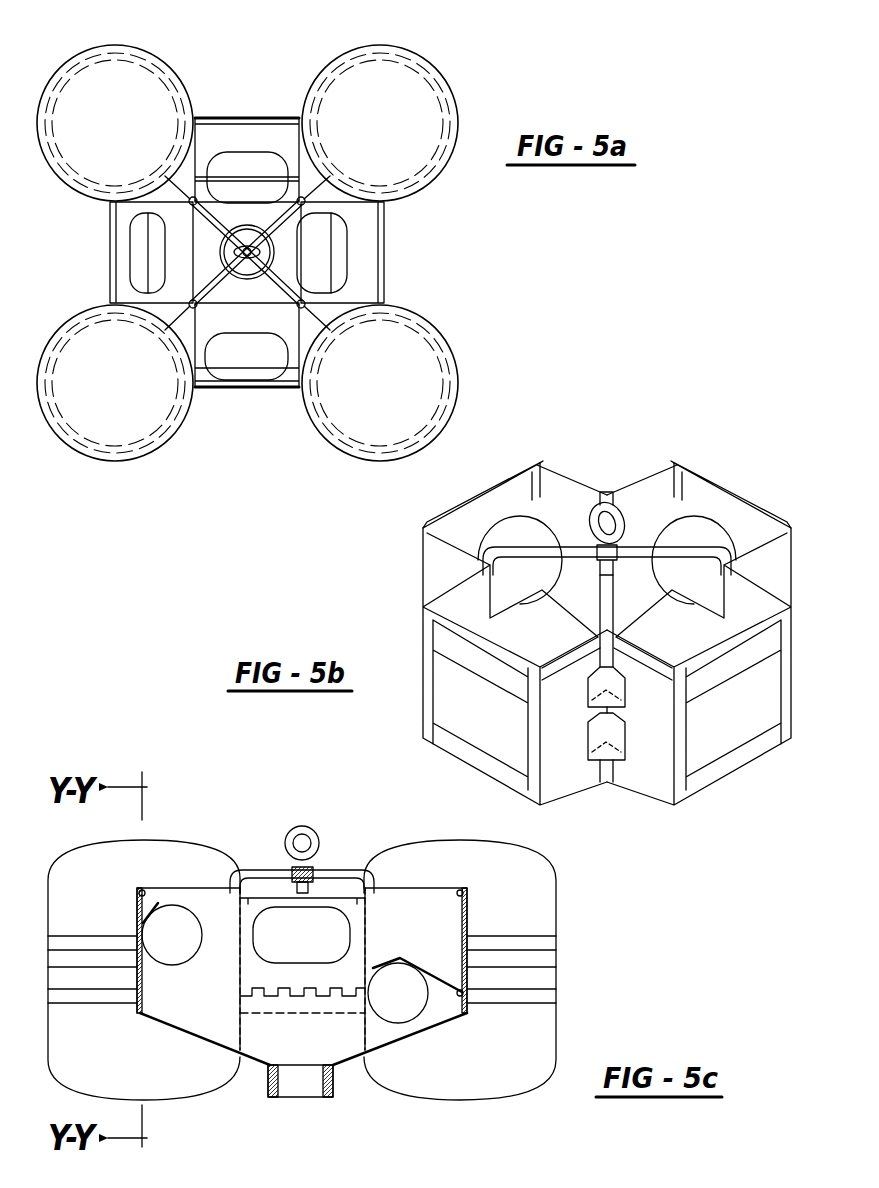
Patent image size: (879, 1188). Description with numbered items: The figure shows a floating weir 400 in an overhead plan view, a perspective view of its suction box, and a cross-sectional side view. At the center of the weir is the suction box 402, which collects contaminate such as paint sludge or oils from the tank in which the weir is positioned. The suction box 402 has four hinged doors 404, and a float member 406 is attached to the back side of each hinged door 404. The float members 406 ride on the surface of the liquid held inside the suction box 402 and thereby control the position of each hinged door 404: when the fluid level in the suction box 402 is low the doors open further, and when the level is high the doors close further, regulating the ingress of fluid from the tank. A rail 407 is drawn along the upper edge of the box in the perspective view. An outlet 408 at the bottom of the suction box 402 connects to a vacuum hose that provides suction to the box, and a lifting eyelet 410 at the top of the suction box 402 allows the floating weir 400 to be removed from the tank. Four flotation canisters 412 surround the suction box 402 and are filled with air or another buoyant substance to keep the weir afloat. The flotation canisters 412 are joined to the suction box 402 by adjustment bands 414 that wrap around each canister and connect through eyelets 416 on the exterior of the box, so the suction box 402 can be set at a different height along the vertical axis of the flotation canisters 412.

In FIG. 5a, the floating weir 400 is at (487, 65).
In FIG. 5c, the floating weir 400 is at (585, 892).
In FIG. 5a, the suction box 402 is at (258, 326).
In FIG. 5c, the suction box 402 is at (403, 907).
In FIG. 5b, the hinged doors 404 is at (528, 507).
In FIG. 5a, the float member 406 is at (255, 167).
In FIG. 5b, the float member 406 is at (527, 537).
In FIG. 5b, the rail 407 is at (778, 557).
In FIG. 5c, the outlet 408 is at (300, 1080).
In FIG. 5c, the lifting eyelet 410 is at (293, 830).
In FIG. 5a, the flotation canisters 412 is at (123, 131).
In FIG. 5c, the adjustment bands 414 is at (55, 943).
In FIG. 5b, the eyelets 416 is at (602, 752).